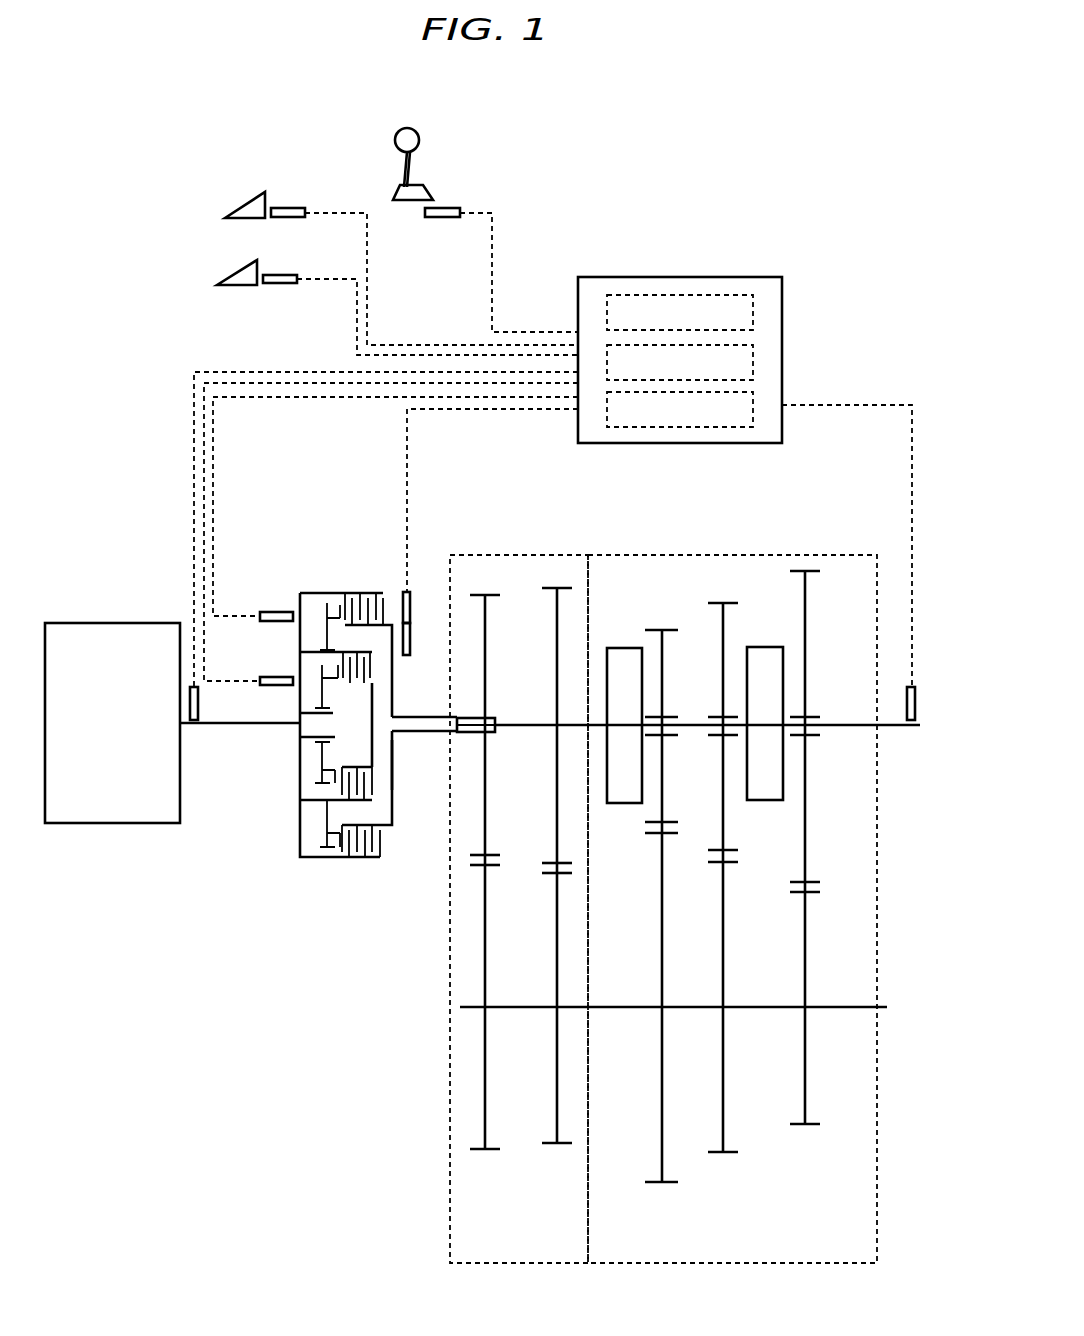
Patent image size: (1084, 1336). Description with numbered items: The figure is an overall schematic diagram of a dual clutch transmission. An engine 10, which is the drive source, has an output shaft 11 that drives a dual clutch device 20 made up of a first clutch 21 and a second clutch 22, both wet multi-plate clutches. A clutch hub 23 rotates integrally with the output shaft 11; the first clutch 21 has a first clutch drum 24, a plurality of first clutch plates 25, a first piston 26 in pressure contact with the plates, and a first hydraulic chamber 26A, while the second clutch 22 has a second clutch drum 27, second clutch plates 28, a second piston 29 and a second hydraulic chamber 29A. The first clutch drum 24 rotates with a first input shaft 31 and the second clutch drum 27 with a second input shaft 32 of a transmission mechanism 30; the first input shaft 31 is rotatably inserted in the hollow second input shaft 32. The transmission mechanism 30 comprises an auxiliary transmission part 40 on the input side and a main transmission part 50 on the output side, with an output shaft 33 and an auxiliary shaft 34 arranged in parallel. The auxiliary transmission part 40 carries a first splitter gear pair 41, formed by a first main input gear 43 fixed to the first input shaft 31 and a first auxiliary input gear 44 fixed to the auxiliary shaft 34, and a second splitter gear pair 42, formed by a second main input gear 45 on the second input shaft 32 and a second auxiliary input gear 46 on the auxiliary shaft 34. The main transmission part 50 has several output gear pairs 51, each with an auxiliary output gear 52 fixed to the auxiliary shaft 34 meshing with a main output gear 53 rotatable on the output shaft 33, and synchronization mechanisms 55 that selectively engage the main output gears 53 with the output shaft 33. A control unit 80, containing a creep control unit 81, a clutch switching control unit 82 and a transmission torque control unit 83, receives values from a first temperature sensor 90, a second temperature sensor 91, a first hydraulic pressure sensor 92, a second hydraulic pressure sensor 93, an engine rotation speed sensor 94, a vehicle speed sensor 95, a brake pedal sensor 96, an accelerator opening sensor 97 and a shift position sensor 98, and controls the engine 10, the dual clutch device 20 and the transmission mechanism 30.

The engine 10 is at (97, 737).
The output shaft 11 is at (220, 725).
The dual clutch device 20 is at (352, 565).
The first clutch 21 is at (288, 658).
The second clutch 22 is at (291, 596).
The clutch hub 23 is at (298, 812).
The first clutch drum 24 is at (375, 708).
The first clutch plates 25 is at (350, 767).
The first piston 26 is at (320, 752).
The first hydraulic chamber 26A is at (312, 770).
The second clutch drum 27 is at (393, 760).
The second clutch plates 28 is at (380, 842).
The second piston 29 is at (322, 835).
The second hydraulic chamber 29A is at (308, 828).
The transmission mechanism 30 is at (673, 530).
The first input shaft 31 is at (528, 724).
The second input shaft 32 is at (462, 718).
The output shaft 33 is at (848, 724).
The auxiliary shaft 34 is at (606, 1010).
The auxiliary transmission part 40 is at (507, 555).
The first splitter gear pair 41 is at (564, 1179).
The second splitter gear pair 42 is at (496, 1174).
The first main input gear 43 is at (556, 783).
The first auxiliary input gear 44 is at (556, 910).
The second main input gear 45 is at (486, 820).
The second auxiliary input gear 46 is at (486, 975).
The main transmission part 50 is at (777, 555).
The output gear pair 51 is at (668, 1197).
The auxiliary output gear 52 is at (663, 915).
The main output gear 53 is at (723, 673).
The synchronization mechanism 55 is at (615, 648).
The control unit 80 is at (704, 277).
The creep control unit 81 is at (667, 327).
The clutch switching control unit 82 is at (667, 377).
The transmission torque control unit 83 is at (667, 425).
The first temperature sensor 90 is at (411, 645).
The second temperature sensor 91 is at (411, 600).
The first hydraulic pressure sensor 92 is at (290, 685).
The second hydraulic pressure sensor 93 is at (290, 621).
The engine rotation speed sensor 94 is at (200, 697).
The vehicle speed sensor 95 is at (916, 700).
The brake pedal sensor 96 is at (283, 275).
The accelerator opening sensor 97 is at (293, 208).
The shift position sensor 98 is at (443, 208).